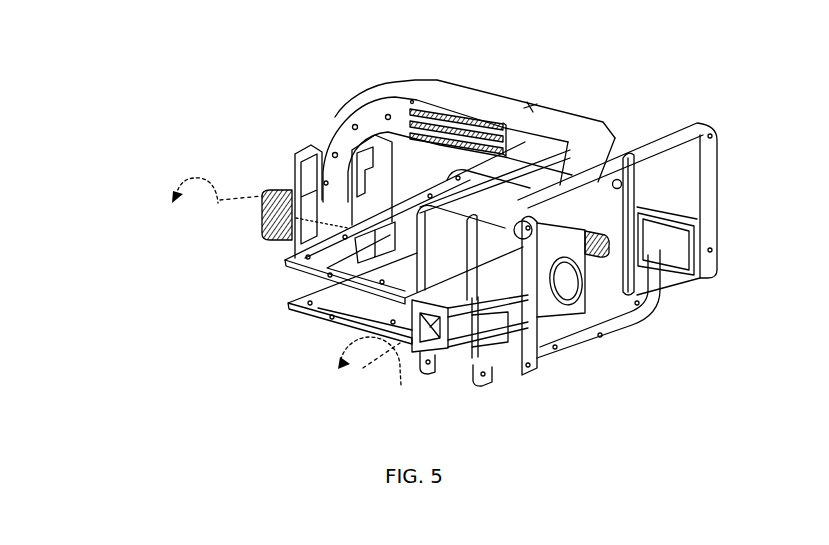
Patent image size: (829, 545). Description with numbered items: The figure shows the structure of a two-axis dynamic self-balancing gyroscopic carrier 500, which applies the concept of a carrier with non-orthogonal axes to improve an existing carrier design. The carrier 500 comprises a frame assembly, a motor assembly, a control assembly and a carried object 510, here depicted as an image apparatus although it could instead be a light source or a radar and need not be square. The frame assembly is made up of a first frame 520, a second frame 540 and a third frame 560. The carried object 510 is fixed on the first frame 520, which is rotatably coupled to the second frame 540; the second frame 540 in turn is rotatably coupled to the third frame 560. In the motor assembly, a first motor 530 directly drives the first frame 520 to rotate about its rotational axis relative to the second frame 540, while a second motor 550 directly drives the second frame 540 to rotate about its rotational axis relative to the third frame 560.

The two-axis dynamic self-balancing gyroscopic carrier 500 is at (288, 99).
The carried object 510 is at (568, 346).
The first frame 520 is at (495, 380).
The first motor 530 is at (597, 258).
The second frame 540 is at (290, 302).
The second motor 550 is at (262, 213).
The third frame 560 is at (332, 134).